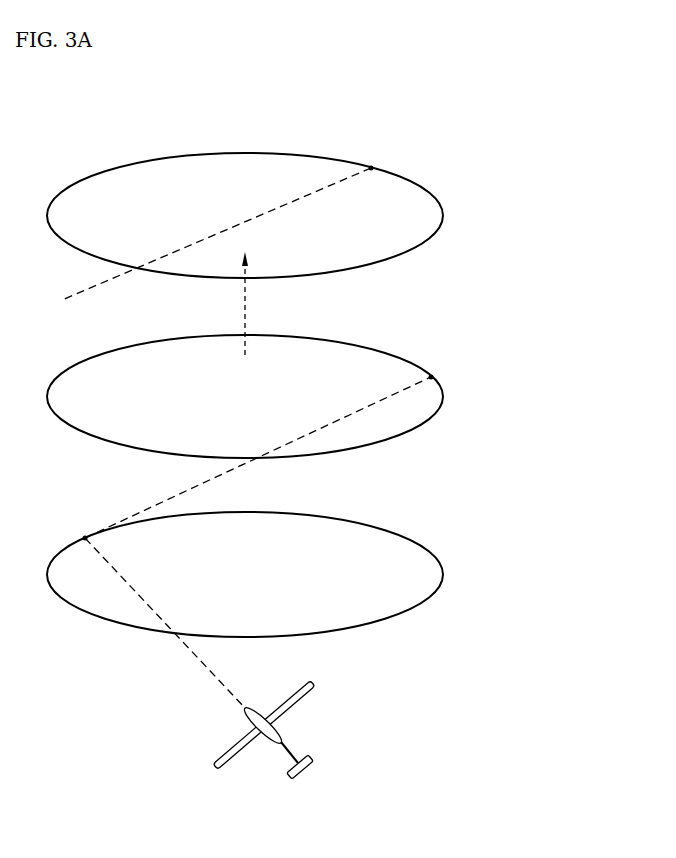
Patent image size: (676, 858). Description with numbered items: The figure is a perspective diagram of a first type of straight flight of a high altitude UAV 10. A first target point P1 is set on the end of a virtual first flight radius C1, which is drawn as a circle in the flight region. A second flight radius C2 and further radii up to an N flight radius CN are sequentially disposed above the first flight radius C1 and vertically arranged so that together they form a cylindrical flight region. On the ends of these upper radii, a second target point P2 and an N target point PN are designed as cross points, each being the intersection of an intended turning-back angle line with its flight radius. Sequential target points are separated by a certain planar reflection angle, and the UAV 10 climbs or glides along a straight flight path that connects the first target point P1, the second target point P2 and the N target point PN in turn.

The N flight radius CN is at (443, 212).
The second flight radius C2 is at (443, 393).
The first flight radius C1 is at (443, 572).
The N target point PN is at (383, 158).
The second target point P2 is at (443, 368).
The first target point P1 is at (72, 528).
The high altitude UAV 10 is at (245, 747).